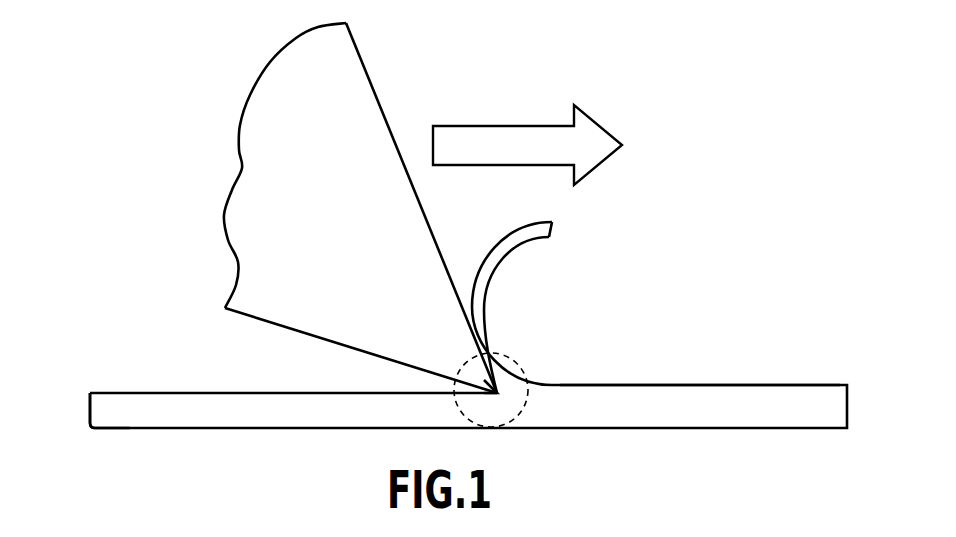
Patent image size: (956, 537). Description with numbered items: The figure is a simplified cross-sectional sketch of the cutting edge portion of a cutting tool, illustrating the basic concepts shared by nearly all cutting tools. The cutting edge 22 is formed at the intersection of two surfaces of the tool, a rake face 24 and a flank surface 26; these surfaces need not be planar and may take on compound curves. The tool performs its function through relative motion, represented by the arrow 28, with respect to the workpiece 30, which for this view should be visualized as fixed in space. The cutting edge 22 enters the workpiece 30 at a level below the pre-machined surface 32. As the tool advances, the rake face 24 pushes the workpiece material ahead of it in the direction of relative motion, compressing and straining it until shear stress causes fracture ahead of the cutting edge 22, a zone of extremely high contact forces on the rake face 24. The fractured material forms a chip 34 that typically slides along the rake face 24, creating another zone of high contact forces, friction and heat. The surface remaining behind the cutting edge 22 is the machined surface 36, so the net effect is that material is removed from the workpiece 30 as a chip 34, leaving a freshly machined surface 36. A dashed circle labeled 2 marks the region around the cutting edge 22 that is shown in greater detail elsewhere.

The detail region of FIG. 2 is at (522, 430).
The cutting edge 22 is at (481, 380).
The rake face 24 is at (373, 85).
The flank surface 26 is at (277, 325).
The arrow 28 is at (520, 158).
The workpiece 30 is at (310, 420).
The pre-machined surface 32 is at (610, 385).
The chip 34 is at (508, 260).
The machined surface 36 is at (127, 393).